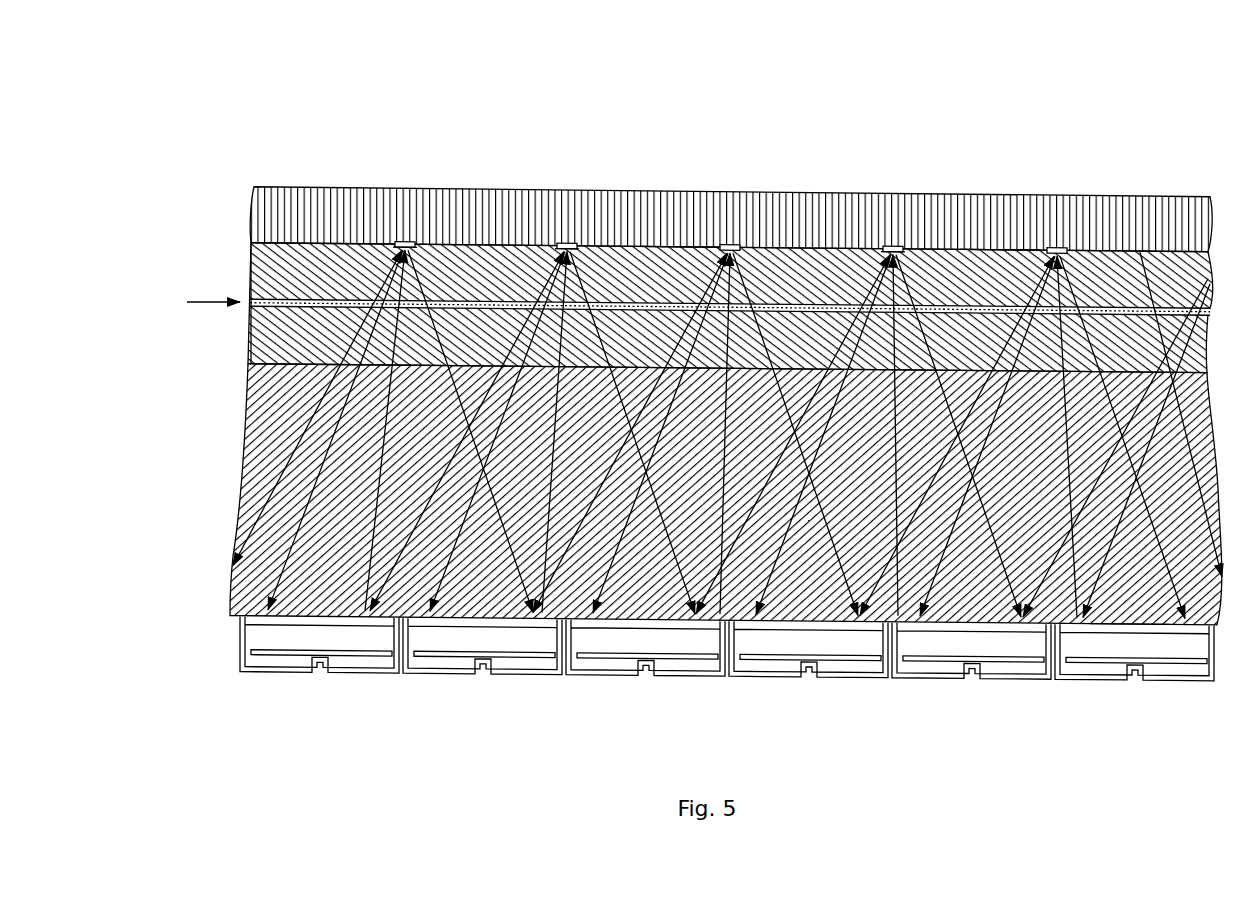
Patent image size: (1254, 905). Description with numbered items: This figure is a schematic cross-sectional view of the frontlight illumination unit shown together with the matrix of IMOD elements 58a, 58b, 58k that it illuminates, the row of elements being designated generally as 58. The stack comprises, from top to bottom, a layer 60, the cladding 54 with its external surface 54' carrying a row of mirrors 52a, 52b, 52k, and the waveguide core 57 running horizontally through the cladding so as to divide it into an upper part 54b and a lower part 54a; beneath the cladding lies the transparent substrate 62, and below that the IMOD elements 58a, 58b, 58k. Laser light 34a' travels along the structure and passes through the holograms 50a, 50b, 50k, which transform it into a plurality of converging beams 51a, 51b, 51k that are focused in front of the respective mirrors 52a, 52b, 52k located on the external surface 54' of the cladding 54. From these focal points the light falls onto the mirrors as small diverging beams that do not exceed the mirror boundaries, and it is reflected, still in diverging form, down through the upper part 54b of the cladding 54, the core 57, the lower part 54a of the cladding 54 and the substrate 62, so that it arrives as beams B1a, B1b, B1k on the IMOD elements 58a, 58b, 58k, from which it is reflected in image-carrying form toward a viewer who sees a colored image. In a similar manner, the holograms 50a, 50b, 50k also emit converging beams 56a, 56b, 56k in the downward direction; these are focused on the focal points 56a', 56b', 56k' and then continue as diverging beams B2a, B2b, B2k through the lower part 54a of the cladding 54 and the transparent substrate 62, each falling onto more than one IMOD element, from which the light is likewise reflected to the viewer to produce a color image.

The cover layer 60 is at (628, 220).
The cladding 54 is at (730, 226).
The lower part of the cladding 54a is at (290, 328).
The upper part of the cladding 54b is at (687, 285).
The external surface of the cladding 54' is at (1003, 188).
The core 57 is at (1175, 308).
The hologram 50a is at (352, 368).
The hologram 50b is at (560, 350).
The hologram 50k is at (888, 350).
The laser light 34a' is at (213, 280).
The converging beam 51a is at (392, 246).
The converging beam 51b is at (557, 247).
The converging beam 51k is at (883, 248).
The mirror 52a is at (400, 243).
The mirror 52b is at (560, 244).
The mirror 52k is at (886, 245).
The converging beam 56a is at (317, 344).
The focal point 56a' is at (412, 342).
The converging beam 56b is at (467, 367).
The focal point 56b' is at (622, 343).
The converging beam 56k is at (793, 368).
The focal point 56k' is at (953, 344).
The beam B1a is at (492, 580).
The diverging beam B2a is at (263, 556).
The beam B1b is at (652, 570).
The diverging beam B2b is at (423, 560).
The beam B1k is at (970, 575).
The diverging beam B2k is at (743, 560).
The detector 58 is at (1124, 690).
The IMOD element 58a is at (345, 673).
The IMOD element 58b is at (522, 674).
The IMOD element 58k is at (832, 674).
The substrate 62 is at (1128, 603).